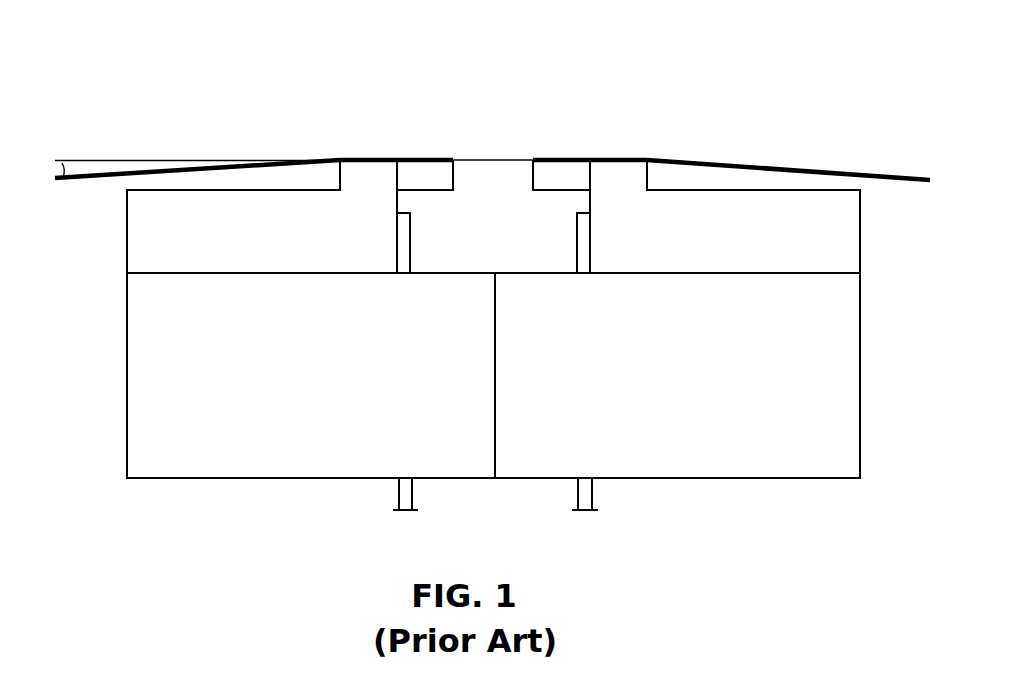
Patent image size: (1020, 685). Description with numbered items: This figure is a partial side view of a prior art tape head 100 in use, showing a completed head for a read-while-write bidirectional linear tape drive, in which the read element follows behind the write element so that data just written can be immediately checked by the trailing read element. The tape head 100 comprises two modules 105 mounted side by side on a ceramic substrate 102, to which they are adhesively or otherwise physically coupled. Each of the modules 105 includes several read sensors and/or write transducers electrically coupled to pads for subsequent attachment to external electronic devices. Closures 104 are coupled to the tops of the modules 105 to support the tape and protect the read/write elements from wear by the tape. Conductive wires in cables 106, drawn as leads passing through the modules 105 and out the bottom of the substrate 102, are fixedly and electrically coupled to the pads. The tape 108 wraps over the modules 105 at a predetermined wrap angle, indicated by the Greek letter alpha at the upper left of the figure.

The tape head 100 is at (132, 108).
The ceramic substrate 102 is at (127, 350).
The closures 104 is at (455, 177).
The modules 105 is at (127, 238).
The cables 106 is at (410, 227).
The tape 108 is at (805, 168).